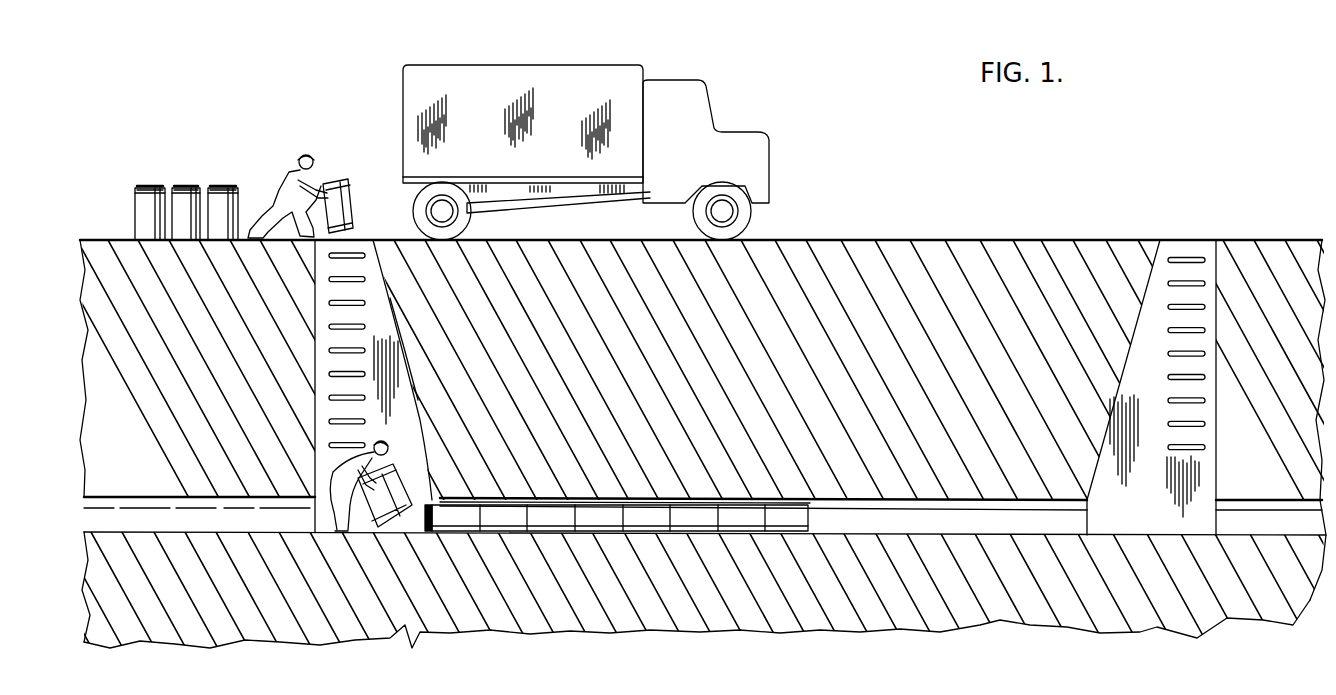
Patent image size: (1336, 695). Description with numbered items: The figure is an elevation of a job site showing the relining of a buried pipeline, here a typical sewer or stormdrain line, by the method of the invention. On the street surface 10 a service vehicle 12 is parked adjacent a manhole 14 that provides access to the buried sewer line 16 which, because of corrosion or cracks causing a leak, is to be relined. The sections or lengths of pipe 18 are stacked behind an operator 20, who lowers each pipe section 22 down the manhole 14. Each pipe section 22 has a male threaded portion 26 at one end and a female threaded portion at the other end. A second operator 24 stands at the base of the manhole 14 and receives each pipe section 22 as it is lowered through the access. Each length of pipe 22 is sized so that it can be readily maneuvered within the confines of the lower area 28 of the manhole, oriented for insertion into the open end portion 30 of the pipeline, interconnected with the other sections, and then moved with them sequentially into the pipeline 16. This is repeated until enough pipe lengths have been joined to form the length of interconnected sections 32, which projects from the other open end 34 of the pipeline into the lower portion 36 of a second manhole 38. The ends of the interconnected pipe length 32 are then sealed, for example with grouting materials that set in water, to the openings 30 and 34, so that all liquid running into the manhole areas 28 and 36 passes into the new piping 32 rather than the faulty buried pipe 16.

The street surface 10 is at (918, 238).
The service vehicle 12 is at (739, 101).
The manhole 14 is at (309, 255).
The sewer line 16 is at (554, 491).
The sections or lengths of pipe 18 is at (127, 190).
The operator 20 is at (279, 165).
The pipe section 22 is at (355, 187).
The operator 24 is at (320, 500).
The male threaded portion 26 is at (150, 187).
The lower area of the manhole 28 is at (368, 521).
The open end portion of the pipeline 30 is at (441, 488).
The length of interconnected sections 32 is at (645, 518).
The other open end of the pipeline 34 is at (1082, 497).
The lower portion of the manhole 36 is at (1147, 539).
The manhole 38 is at (1199, 322).